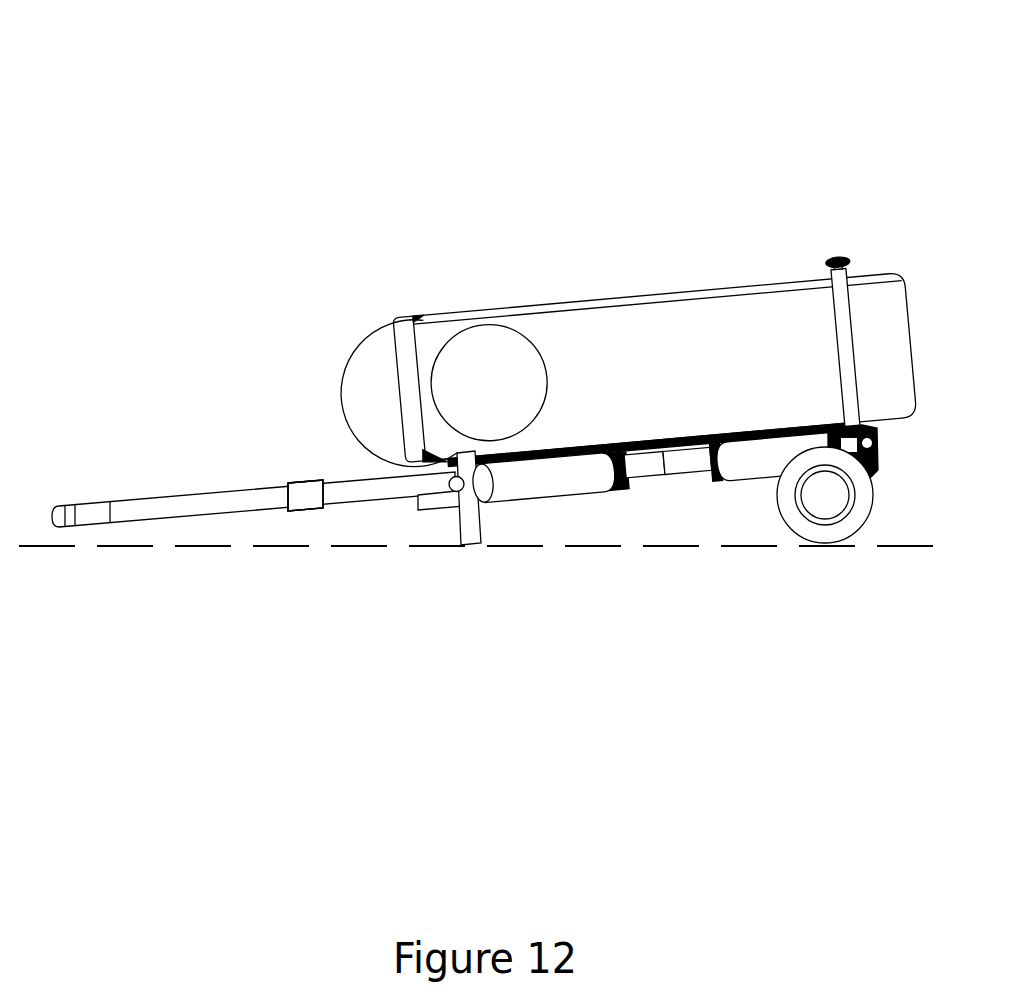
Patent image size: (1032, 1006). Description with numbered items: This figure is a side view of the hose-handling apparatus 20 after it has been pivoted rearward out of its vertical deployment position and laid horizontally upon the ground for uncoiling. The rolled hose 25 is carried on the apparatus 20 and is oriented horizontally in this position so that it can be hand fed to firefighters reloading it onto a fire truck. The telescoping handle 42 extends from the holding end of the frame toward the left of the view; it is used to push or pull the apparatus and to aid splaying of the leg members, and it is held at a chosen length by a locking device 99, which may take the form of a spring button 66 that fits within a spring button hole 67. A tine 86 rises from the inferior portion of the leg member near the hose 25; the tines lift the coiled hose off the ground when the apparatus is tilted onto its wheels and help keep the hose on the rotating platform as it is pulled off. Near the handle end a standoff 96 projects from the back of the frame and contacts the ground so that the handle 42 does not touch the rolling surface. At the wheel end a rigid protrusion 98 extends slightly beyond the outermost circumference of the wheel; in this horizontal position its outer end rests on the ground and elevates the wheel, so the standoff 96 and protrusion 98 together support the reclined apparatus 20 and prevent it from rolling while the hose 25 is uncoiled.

The apparatus 20 is at (355, 105).
The hose 25 is at (607, 330).
The handle 42 is at (190, 494).
The spring button 66 is at (318, 480).
The spring button hole 67 is at (305, 495).
The locking device 99 is at (305, 495).
The tine 86 is at (843, 325).
The standoff 96 is at (467, 527).
The rigid protrusion 98 is at (812, 552).